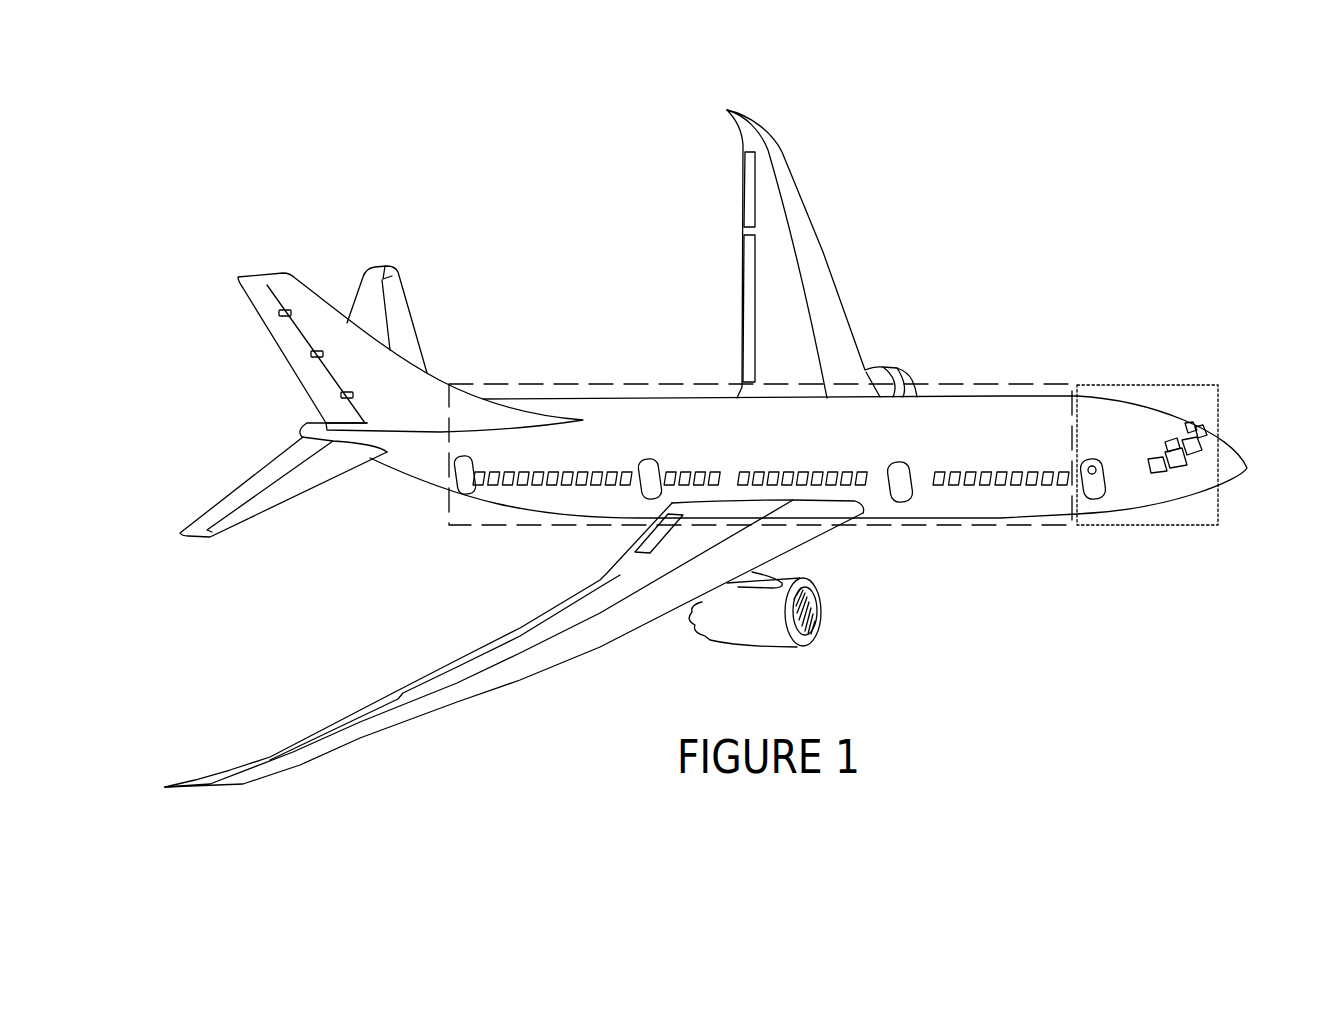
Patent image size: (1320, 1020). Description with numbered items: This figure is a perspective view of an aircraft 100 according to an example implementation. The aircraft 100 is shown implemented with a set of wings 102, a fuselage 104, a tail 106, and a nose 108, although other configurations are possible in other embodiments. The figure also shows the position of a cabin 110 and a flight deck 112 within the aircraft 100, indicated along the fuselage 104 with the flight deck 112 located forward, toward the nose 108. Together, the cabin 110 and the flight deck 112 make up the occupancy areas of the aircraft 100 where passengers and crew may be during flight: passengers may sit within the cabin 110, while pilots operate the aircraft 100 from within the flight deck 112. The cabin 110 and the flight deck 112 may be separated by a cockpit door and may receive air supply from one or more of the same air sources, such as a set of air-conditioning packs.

The aircraft 100 is at (1003, 248).
The set of wings 102 is at (793, 178).
The fuselage 104 is at (595, 398).
The tail 106 is at (287, 288).
The nose 108 is at (1238, 470).
The cabin 110 is at (1002, 385).
The flight deck 112 is at (1161, 385).